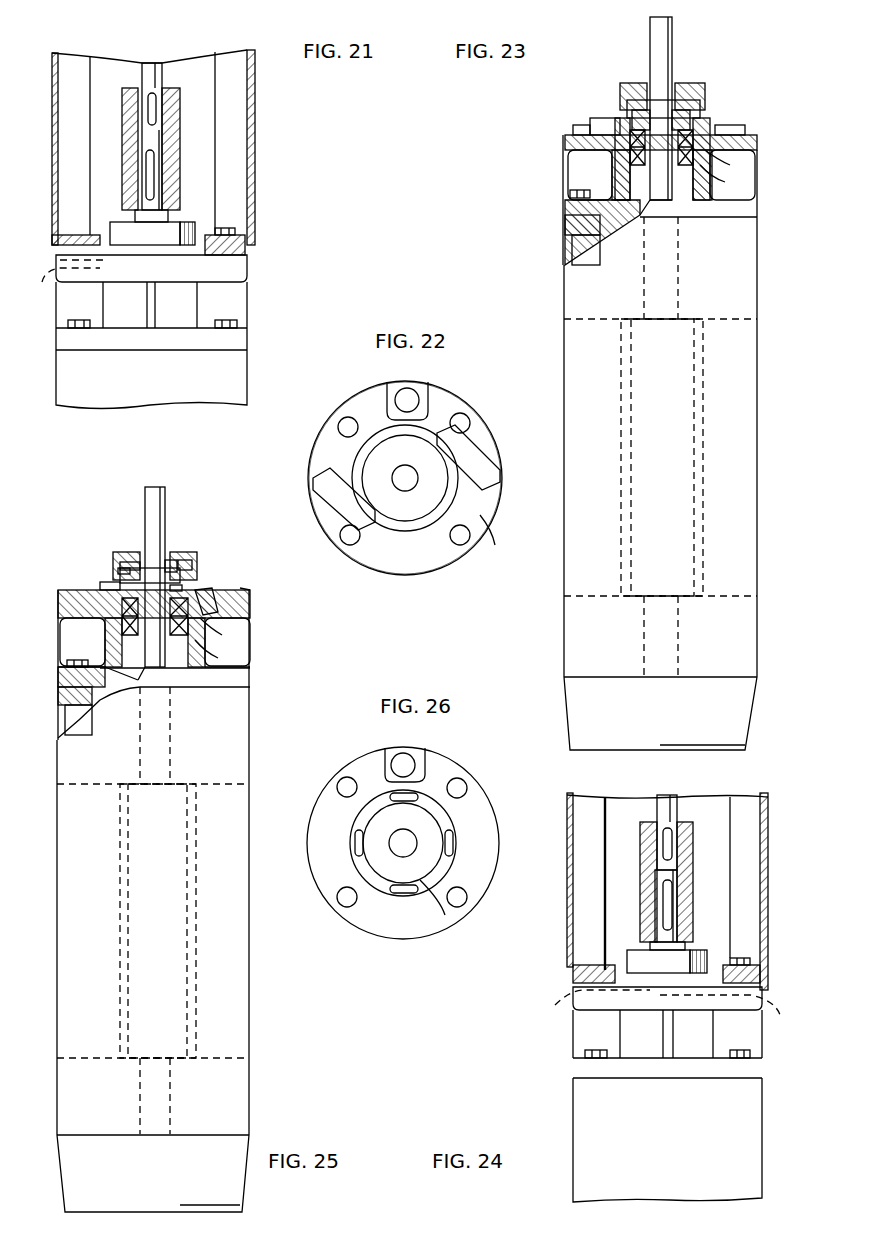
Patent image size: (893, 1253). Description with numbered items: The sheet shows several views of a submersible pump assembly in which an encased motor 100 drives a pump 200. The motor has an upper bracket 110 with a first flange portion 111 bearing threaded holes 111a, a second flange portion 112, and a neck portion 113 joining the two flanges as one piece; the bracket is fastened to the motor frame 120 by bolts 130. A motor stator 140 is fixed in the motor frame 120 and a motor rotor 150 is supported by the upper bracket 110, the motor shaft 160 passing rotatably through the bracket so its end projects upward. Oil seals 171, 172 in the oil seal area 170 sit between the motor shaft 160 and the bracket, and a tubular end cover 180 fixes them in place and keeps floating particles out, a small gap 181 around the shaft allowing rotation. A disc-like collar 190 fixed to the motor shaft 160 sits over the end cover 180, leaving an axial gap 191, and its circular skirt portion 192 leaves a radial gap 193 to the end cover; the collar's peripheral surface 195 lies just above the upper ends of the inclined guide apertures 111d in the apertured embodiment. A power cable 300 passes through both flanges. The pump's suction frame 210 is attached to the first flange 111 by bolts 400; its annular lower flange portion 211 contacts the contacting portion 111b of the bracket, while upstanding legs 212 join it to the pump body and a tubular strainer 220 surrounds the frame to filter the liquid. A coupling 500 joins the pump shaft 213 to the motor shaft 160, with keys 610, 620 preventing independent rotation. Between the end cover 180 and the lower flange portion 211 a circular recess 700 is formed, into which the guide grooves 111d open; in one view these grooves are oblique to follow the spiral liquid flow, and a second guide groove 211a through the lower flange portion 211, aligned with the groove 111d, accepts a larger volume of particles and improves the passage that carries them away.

In FIG. 21, the encased motor 100 is at (250, 398).
In FIG. 23, the encased motor 100 is at (758, 332).
In FIG. 25, the encased motor 100 is at (252, 1090).
In FIG. 24, the encased motor 100 is at (593, 1143).
In FIG. 21, the upper bracket 110 is at (232, 285).
In FIG. 22, the upper bracket 110 is at (445, 560).
In FIG. 26, the upper bracket 110 is at (403, 843).
In FIG. 25, the upper bracket 110 is at (240, 597).
In FIG. 24, the upper bracket 110 is at (640, 1015).
In FIG. 21, the first flange portion 111 is at (250, 272).
In FIG. 22, the first flange portion 111 is at (478, 452).
In FIG. 23, the first flange portion 111 is at (570, 143).
In FIG. 25, the first flange portion 111 is at (250, 605).
In FIG. 24, the first flange portion 111 is at (667, 998).
In FIG. 22, the threaded holes 111a is at (348, 418).
In FIG. 26, the threaded holes 111a is at (350, 780).
In FIG. 22, the contacting portion 111b is at (492, 548).
In FIG. 26, the contacting portion 111b is at (440, 910).
In FIG. 23, the contacting portion 111b is at (605, 118).
In FIG. 25, the contacting portion 111b is at (105, 588).
In FIG. 21, the guide grooves 111d is at (61, 281).
In FIG. 22, the guide grooves 111d is at (340, 478).
In FIG. 26, the guide grooves 111d is at (412, 795).
In FIG. 23, the guide grooves 111d is at (580, 125).
In FIG. 25, the guide grooves 111d is at (215, 590).
In FIG. 24, the guide grooves 111d is at (673, 1011).
In FIG. 25, the second flange portion 112 is at (230, 680).
In FIG. 24, the second flange portion 112 is at (585, 1068).
In FIG. 21, the neck portion 113 is at (130, 308).
In FIG. 25, the neck portion 113 is at (112, 648).
In FIG. 24, the neck portion 113 is at (645, 1045).
In FIG. 23, the motor frame 120 is at (570, 245).
In FIG. 25, the motor frame 120 is at (228, 727).
In FIG. 23, the bolts 130 is at (575, 192).
In FIG. 24, the bolts 130 is at (740, 1060).
In FIG. 23, the motor stator 140 is at (735, 474).
In FIG. 25, the motor stator 140 is at (228, 934).
In FIG. 23, the motor rotor 150 is at (680, 528).
In FIG. 25, the motor rotor 150 is at (163, 1040).
In FIG. 21, the motor shaft 160 is at (165, 162).
In FIG. 22, the motor shaft 160 is at (405, 495).
In FIG. 26, the motor shaft 160 is at (398, 835).
In FIG. 23, the motor shaft 160 is at (672, 32).
In FIG. 25, the motor shaft 160 is at (170, 470).
In FIG. 24, the motor shaft 160 is at (678, 905).
In FIG. 23, the oil seal area 170 is at (705, 100).
In FIG. 25, the oil seal area 170 is at (200, 600).
In FIG. 23, the oil seal 171 is at (730, 165).
In FIG. 25, the oil seal 171 is at (222, 635).
In FIG. 23, the oil seal 172 is at (725, 182).
In FIG. 25, the oil seal 172 is at (218, 658).
In FIG. 25, the tubular end cover 180 is at (126, 552).
In FIG. 23, the small gap 181 is at (688, 105).
In FIG. 25, the small gap 181 is at (178, 560).
In FIG. 21, the disc-like collar 190 is at (182, 222).
In FIG. 22, the disc-like collar 190 is at (425, 510).
In FIG. 26, the disc-like collar 190 is at (418, 895).
In FIG. 23, the disc-like collar 190 is at (632, 82).
In FIG. 25, the disc-like collar 190 is at (120, 552).
In FIG. 24, the disc-like collar 190 is at (700, 950).
In FIG. 25, the axial gap 191 is at (192, 560).
In FIG. 25, the circular skirt portion 192 is at (212, 588).
In FIG. 25, the radial gap 193 is at (122, 566).
In FIG. 25, the peripheral surface 195 is at (180, 588).
In FIG. 21, the pump 200 is at (262, 40).
In FIG. 24, the pump 200 is at (772, 800).
In FIG. 21, the suction frame 210 is at (70, 75).
In FIG. 21, the lower flange portion 211 is at (248, 248).
In FIG. 24, the lower flange portion 211 is at (572, 972).
In FIG. 21, the guide groove 211a is at (60, 242).
In FIG. 21, the legs 212 is at (228, 78).
In FIG. 24, the legs 212 is at (590, 810).
In FIG. 21, the pump shaft 213 is at (150, 75).
In FIG. 24, the pump shaft 213 is at (668, 810).
In FIG. 24, the tubular strainer 220 is at (768, 895).
In FIG. 22, the power cable 300 is at (410, 392).
In FIG. 26, the power cable 300 is at (400, 755).
In FIG. 21, the bolts 400 is at (256, 212).
In FIG. 24, the bolts 400 is at (742, 957).
In FIG. 21, the coupling 500 is at (182, 115).
In FIG. 24, the coupling 500 is at (695, 850).
In FIG. 21, the key 610 is at (148, 105).
In FIG. 24, the key 610 is at (663, 845).
In FIG. 21, the key 620 is at (148, 170).
In FIG. 24, the key 620 is at (663, 895).
In FIG. 21, the space or recess 700 is at (108, 235).
In FIG. 24, the space or recess 700 is at (625, 968).